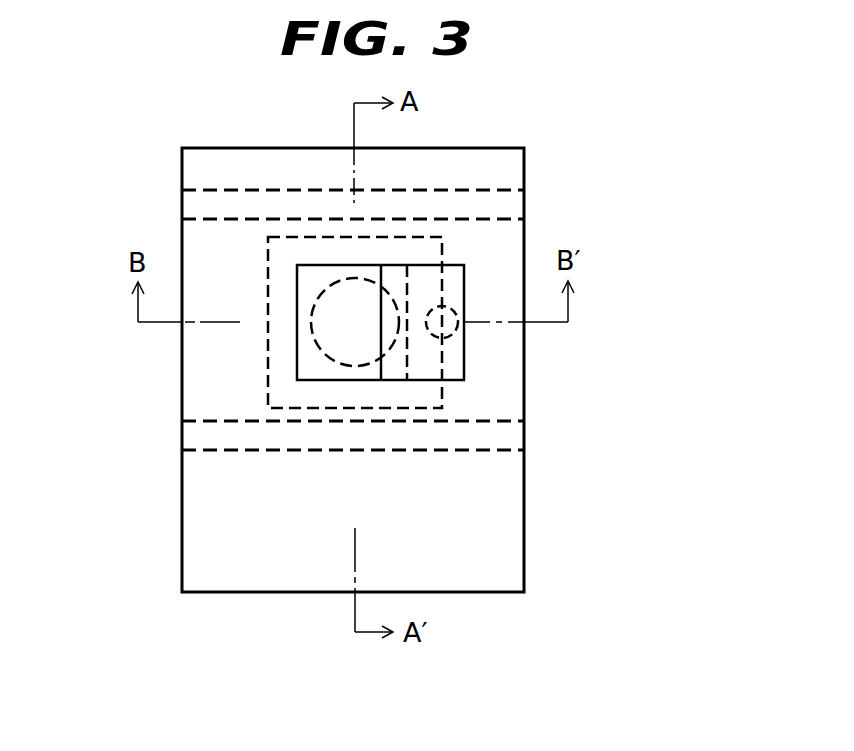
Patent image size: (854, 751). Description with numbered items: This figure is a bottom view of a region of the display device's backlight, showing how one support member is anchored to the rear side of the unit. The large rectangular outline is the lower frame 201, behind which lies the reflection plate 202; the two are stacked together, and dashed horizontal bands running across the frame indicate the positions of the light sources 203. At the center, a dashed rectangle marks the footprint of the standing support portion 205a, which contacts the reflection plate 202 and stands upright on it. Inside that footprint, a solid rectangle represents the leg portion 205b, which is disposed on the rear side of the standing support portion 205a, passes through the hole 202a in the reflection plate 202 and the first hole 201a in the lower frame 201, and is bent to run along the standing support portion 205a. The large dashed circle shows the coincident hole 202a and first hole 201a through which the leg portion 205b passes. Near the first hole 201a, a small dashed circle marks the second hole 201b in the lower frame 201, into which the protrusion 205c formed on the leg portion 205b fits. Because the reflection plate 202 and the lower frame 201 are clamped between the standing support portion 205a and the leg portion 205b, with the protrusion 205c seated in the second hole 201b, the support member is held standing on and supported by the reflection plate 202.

The frame member (lower frame) 201 is at (402, 415).
The reflection plate 202 is at (470, 567).
The light sources 203 is at (232, 203).
The standing support portions 205a is at (265, 355).
The leg portions 205b is at (453, 355).
The protrusions 205c is at (574, 228).
The second holes 201b is at (449, 304).
The first holes 201a is at (270, 488).
The holes 202a is at (323, 384).